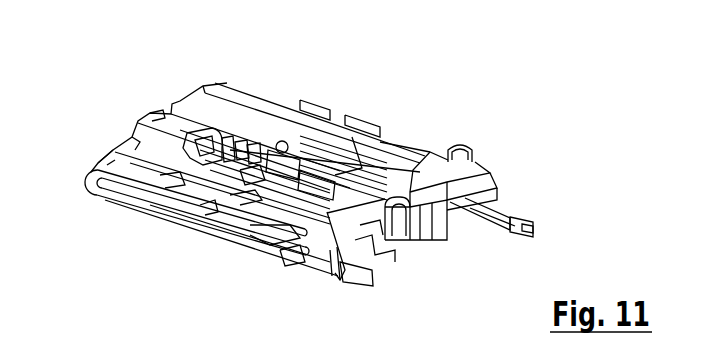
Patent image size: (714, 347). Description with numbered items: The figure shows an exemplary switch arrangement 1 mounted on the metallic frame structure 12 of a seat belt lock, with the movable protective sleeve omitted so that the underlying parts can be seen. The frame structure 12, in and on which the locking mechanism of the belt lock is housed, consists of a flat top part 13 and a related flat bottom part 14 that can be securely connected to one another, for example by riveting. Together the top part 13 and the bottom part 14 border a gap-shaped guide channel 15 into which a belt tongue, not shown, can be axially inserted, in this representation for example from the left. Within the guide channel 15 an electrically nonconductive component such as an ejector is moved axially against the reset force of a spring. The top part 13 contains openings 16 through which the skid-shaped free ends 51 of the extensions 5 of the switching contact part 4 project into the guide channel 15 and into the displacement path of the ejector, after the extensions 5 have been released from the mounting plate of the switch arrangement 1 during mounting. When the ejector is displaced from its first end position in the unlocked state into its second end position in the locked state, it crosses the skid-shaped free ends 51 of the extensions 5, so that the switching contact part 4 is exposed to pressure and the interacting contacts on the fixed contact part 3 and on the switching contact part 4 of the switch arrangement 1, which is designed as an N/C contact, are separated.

The switch arrangement 1 is at (456, 146).
The fixed contact part 3 is at (413, 167).
The switching contact part 4 is at (357, 140).
The extensions 5 is at (350, 283).
The frame structure 12 is at (105, 168).
The top part 13 is at (192, 112).
The bottom part 14 is at (147, 218).
The guide channel 15 is at (207, 230).
The openings 16 is at (240, 252).
The skid-shaped free ends 51 is at (291, 253).